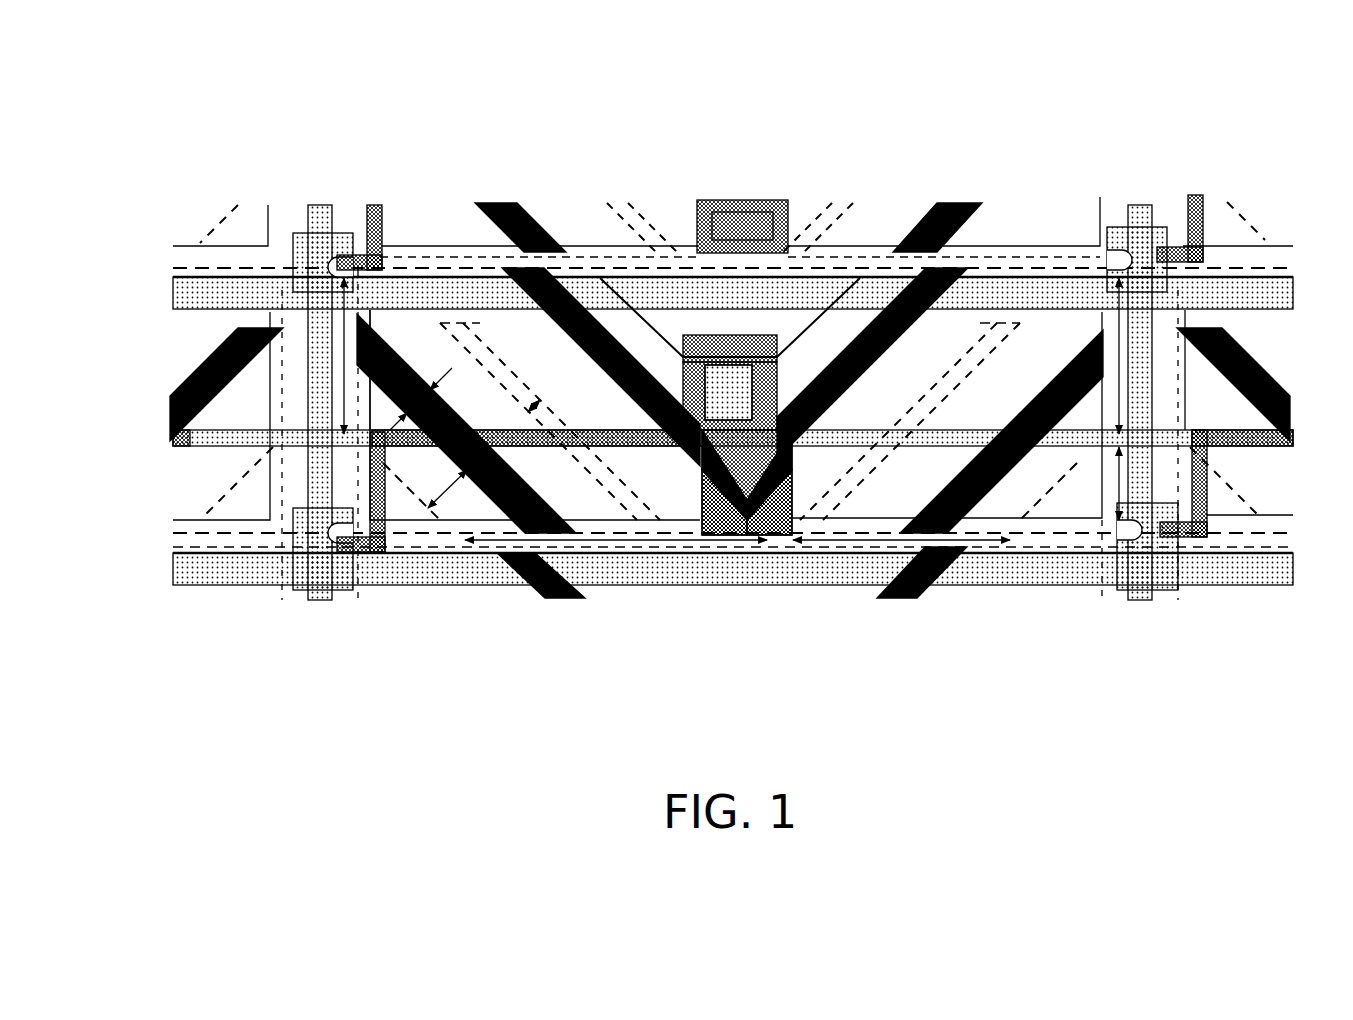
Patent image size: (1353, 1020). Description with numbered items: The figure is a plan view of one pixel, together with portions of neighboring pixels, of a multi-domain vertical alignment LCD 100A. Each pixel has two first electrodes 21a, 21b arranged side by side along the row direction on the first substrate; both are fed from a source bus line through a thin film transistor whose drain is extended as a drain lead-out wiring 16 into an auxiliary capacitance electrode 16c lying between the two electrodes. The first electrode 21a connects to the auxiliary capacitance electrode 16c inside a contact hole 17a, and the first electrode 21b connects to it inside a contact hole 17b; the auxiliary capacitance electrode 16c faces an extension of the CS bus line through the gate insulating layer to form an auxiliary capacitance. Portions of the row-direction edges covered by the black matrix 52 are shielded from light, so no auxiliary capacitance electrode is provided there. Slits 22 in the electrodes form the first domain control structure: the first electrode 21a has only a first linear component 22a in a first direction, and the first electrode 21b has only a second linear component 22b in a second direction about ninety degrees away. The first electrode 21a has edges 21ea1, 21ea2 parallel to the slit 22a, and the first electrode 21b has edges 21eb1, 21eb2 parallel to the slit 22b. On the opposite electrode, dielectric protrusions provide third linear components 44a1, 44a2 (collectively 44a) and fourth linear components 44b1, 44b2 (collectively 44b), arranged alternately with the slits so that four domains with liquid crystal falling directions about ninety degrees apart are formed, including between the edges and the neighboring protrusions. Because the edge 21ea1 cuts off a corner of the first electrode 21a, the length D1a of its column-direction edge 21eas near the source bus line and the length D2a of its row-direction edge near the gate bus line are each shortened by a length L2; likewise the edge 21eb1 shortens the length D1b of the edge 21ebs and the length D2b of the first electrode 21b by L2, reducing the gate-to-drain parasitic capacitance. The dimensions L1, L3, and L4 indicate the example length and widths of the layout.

The LCD 100A is at (1230, 145).
The drain lead-out wiring 16 is at (497, 430).
The auxiliary capacitance electrode 16c is at (745, 200).
The contact hole 17a is at (812, 265).
The contact hole 17b is at (690, 335).
The first electrode 21a is at (438, 246).
The first electrode 21b is at (1050, 246).
The edge 21ea1 is at (370, 478).
The edge 21ea2 is at (612, 250).
The edge 21eas is at (365, 376).
The edge 21eb1 is at (1197, 553).
The edge 21eb2 is at (832, 255).
The edge 21ebs is at (1210, 392).
The slits 22 is at (790, 678).
The first linear component 22a is at (700, 545).
The second linear component 22b is at (805, 540).
The third linear components 44a is at (500, 676).
The third linear component 44a1 is at (448, 505).
The third linear component 44a2 is at (600, 372).
The fourth linear components 44b is at (1095, 676).
The fourth linear component 44b1 is at (960, 520).
The fourth linear component 44b2 is at (935, 300).
The black matrix 52 is at (272, 215).
The length D1a is at (343, 340).
The length D1b is at (1122, 345).
The length D2a is at (556, 545).
The length D2b is at (840, 545).
The length L1 is at (447, 488).
The length L2 is at (1292, 468).
The width L3 is at (421, 395).
The width L4 is at (536, 396).